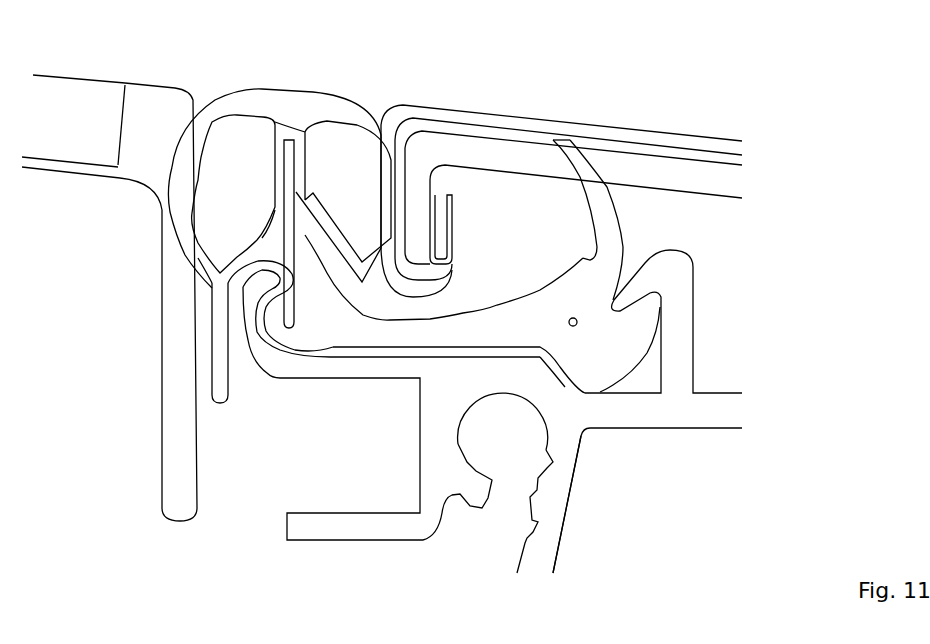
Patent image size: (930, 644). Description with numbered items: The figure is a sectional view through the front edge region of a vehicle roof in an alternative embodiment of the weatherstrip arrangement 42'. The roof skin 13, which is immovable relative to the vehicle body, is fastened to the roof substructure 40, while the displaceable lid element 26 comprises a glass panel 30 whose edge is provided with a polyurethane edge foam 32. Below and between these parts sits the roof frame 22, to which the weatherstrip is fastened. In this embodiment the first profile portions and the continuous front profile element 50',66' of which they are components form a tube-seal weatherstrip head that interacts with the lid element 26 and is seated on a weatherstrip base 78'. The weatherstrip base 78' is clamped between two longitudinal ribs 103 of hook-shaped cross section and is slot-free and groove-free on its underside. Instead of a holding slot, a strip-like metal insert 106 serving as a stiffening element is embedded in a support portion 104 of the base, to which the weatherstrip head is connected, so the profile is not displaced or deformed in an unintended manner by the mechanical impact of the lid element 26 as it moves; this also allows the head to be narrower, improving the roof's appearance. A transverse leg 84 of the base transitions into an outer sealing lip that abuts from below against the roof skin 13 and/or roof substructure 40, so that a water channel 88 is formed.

The roof skin 13 is at (613, 133).
The roof frame 22 is at (567, 518).
The lid element 26 is at (112, 80).
The glass panel 30 is at (53, 108).
The edge foam 32 is at (155, 155).
The roof substructure 40 is at (693, 176).
The weatherstrip arrangement 42' is at (279, 158).
The first profile portions of continuous front profile element 50',66' is at (404, 146).
The weatherstrip base 78' is at (301, 455).
The transverse leg 84 is at (488, 330).
The water channel 88 is at (460, 287).
The longitudinal ribs 103 is at (245, 327).
The support portion 104 is at (266, 238).
The metal insert 106 is at (292, 205).